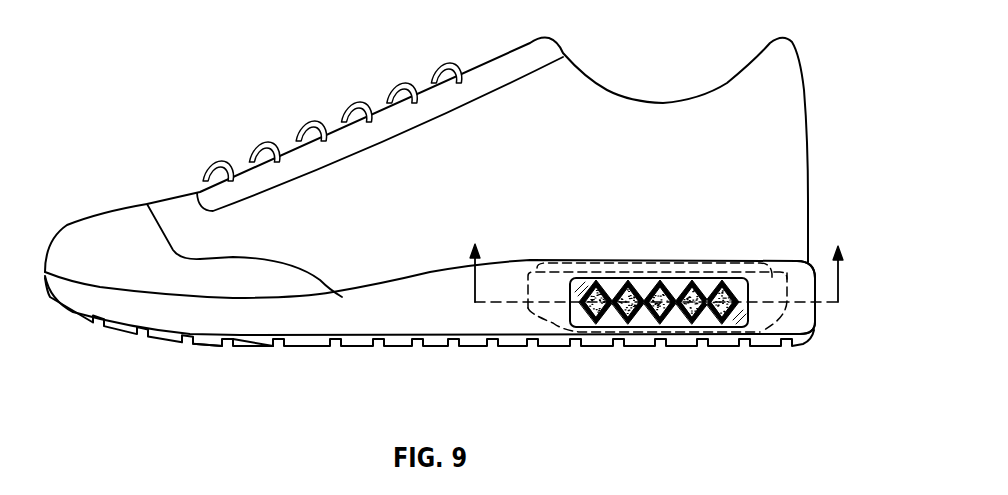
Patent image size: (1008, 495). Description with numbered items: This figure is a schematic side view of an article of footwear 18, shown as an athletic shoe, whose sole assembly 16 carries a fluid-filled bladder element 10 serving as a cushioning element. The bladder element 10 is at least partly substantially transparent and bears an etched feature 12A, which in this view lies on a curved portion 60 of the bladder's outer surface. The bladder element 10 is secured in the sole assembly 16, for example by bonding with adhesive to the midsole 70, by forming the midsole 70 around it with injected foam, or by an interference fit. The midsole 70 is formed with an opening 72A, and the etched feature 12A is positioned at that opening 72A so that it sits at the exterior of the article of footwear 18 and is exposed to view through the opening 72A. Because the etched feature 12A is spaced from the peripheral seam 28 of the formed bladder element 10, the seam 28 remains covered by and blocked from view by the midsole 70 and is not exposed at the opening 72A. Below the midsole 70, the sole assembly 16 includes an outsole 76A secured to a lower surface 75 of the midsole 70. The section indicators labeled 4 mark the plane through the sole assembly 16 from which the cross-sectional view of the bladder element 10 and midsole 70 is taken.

The article of footwear 18 is at (168, 67).
The sole assembly 16 is at (818, 345).
The midsole 70 is at (457, 307).
The curved portion 60 is at (753, 313).
The seam 28 is at (764, 264).
The fluid-filled bladder element 10 is at (530, 334).
The etched feature 12A is at (599, 323).
The opening 72A is at (739, 318).
The lower surface 75 is at (207, 337).
The outsole 76A is at (254, 347).
The section line 4- 4 is at (658, 257).